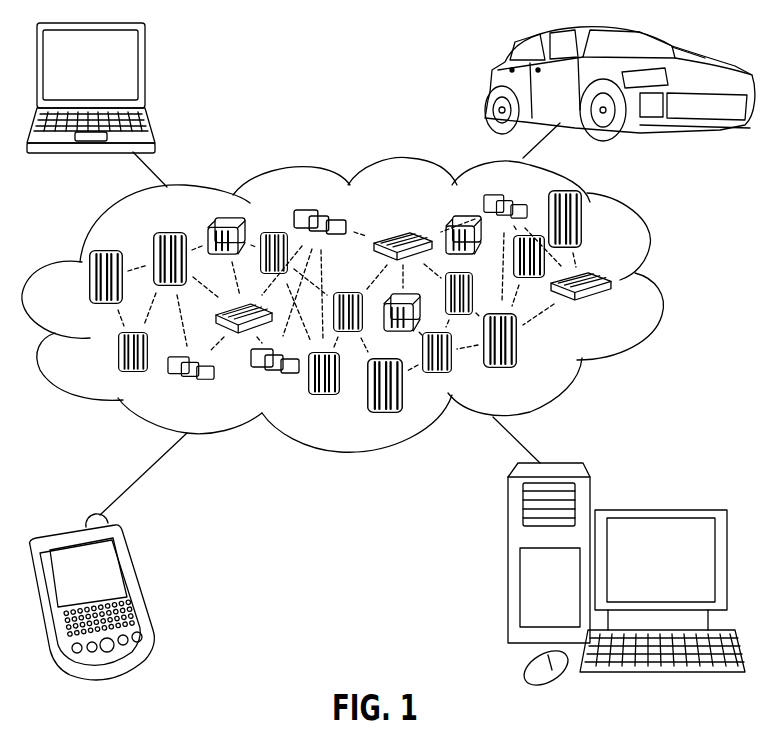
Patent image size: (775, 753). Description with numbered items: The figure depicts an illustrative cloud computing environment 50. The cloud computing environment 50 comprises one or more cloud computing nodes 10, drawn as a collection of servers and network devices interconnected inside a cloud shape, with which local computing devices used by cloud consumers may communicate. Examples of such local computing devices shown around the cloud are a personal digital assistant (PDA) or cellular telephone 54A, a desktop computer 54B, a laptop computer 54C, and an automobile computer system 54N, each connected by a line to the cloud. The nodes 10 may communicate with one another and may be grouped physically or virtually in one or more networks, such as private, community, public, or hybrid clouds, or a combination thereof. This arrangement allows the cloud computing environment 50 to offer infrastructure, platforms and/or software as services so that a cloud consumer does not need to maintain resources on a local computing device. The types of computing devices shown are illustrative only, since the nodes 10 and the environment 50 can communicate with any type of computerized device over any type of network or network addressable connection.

The cloud computing nodes 10 is at (613, 308).
The cloud computing environment 50 is at (660, 288).
The personal digital assistant (PDA) or cellular telephone 54A is at (137, 583).
The desktop computer 54B is at (660, 508).
The laptop computer 54C is at (147, 72).
The automobile computer system 54N is at (488, 85).